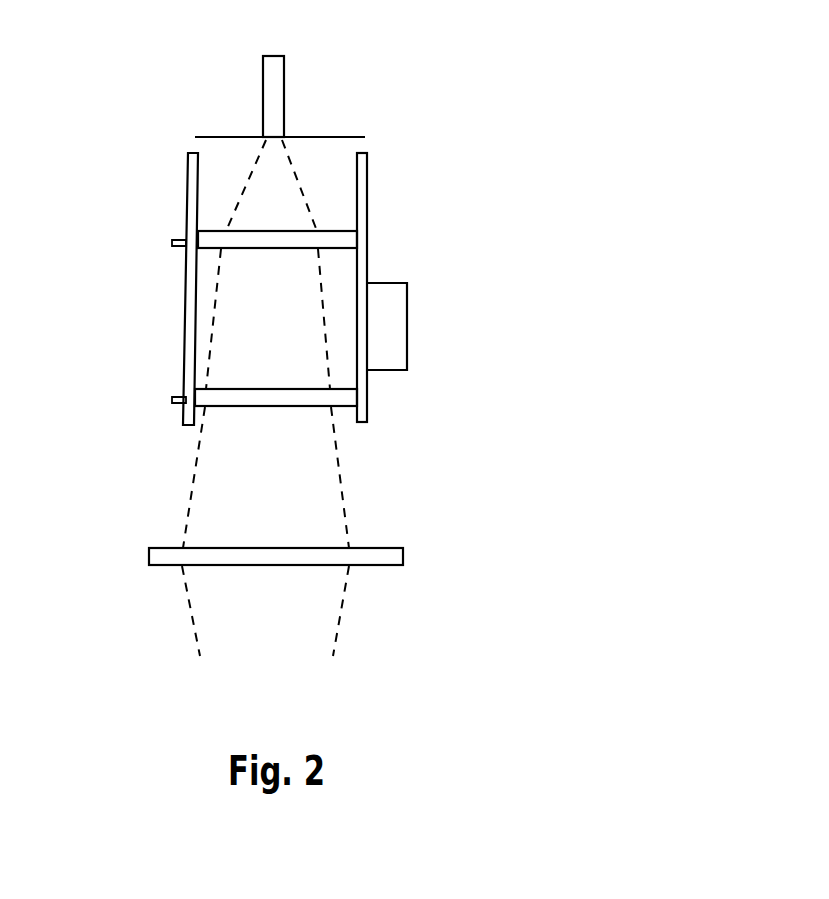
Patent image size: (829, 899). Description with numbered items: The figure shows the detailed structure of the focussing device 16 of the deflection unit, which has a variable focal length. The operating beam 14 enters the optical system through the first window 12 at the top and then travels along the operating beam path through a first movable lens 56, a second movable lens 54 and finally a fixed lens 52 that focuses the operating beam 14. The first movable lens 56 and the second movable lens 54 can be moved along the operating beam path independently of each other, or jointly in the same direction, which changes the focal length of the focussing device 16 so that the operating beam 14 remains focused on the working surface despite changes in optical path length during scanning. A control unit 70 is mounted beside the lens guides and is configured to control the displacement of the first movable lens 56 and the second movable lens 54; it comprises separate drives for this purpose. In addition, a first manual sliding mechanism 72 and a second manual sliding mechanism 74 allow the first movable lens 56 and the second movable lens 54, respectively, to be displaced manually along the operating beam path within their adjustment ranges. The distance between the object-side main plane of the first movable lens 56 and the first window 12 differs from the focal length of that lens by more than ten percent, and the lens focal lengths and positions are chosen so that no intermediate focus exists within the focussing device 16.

The first window 12 is at (206, 112).
The operating beam 14 is at (293, 173).
The focussing device 16 is at (622, 333).
The fixed lens 52 is at (148, 556).
The second movable lens 54 is at (363, 398).
The first movable lens 56 is at (365, 239).
The control unit 70 is at (407, 338).
The first manual sliding mechanism 72 is at (172, 243).
The second manual sliding mechanism 74 is at (172, 400).